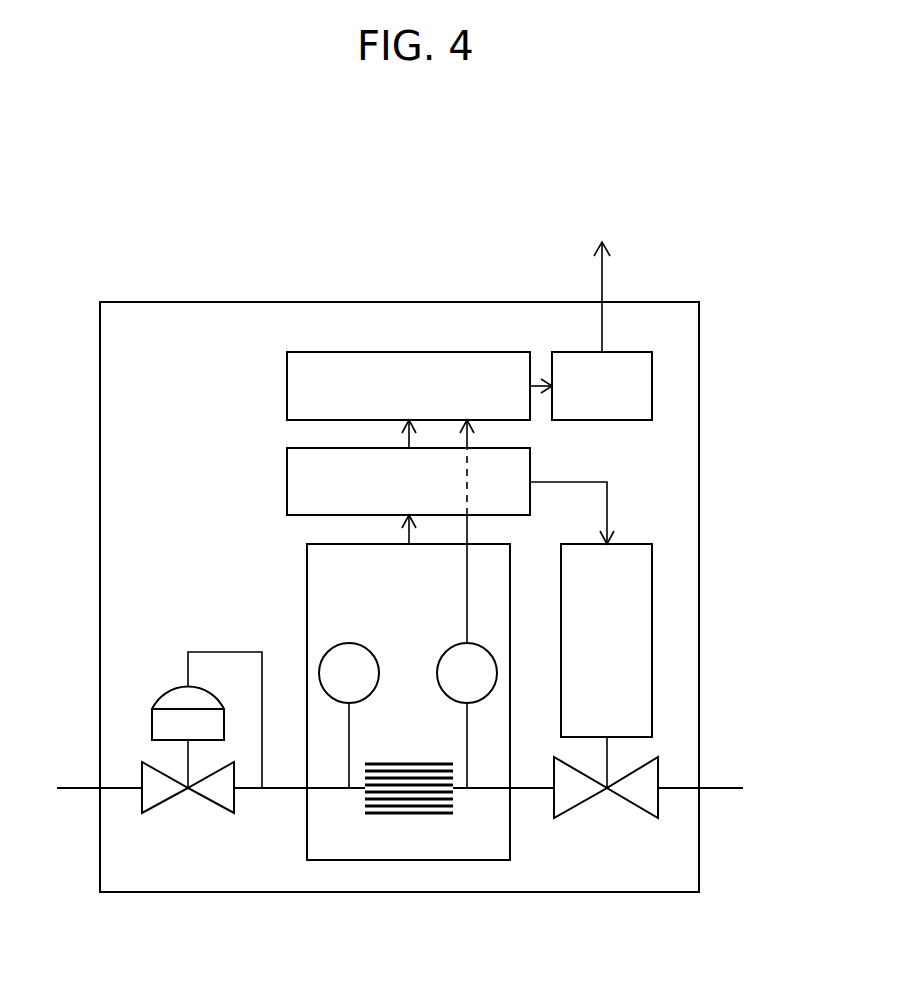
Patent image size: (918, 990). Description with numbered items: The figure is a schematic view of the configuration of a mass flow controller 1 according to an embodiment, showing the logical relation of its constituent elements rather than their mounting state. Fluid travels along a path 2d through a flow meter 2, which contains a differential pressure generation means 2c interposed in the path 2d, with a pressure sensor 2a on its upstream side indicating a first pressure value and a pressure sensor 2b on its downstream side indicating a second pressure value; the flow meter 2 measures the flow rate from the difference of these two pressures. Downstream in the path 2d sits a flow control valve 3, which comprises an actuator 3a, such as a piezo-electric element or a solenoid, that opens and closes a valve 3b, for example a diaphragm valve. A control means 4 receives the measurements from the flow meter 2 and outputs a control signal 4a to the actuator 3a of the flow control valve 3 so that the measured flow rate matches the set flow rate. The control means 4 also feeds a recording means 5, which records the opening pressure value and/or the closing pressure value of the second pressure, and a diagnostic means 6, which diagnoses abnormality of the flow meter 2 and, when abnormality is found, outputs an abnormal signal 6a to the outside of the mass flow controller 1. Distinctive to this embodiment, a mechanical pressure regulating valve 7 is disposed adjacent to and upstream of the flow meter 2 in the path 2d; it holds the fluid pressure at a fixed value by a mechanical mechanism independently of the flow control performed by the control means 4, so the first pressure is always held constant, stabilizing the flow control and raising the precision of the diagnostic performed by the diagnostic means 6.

The mass flow controller 1 is at (708, 294).
The flow meter 2 is at (458, 860).
The pressure sensor 2a is at (320, 676).
The pressure sensor 2b is at (497, 676).
The differential pressure generation means 2c is at (407, 813).
The path 2d is at (128, 788).
The flow control valve 3 is at (675, 681).
The actuator 3a is at (652, 638).
The valve 3b is at (658, 776).
The control means 4 is at (530, 460).
The control signal 4a is at (607, 511).
The recording means 5 is at (357, 352).
The diagnostic means 6 is at (652, 388).
The abnormal signal 6a is at (602, 328).
The mechanical pressure regulating valve 7 is at (165, 685).